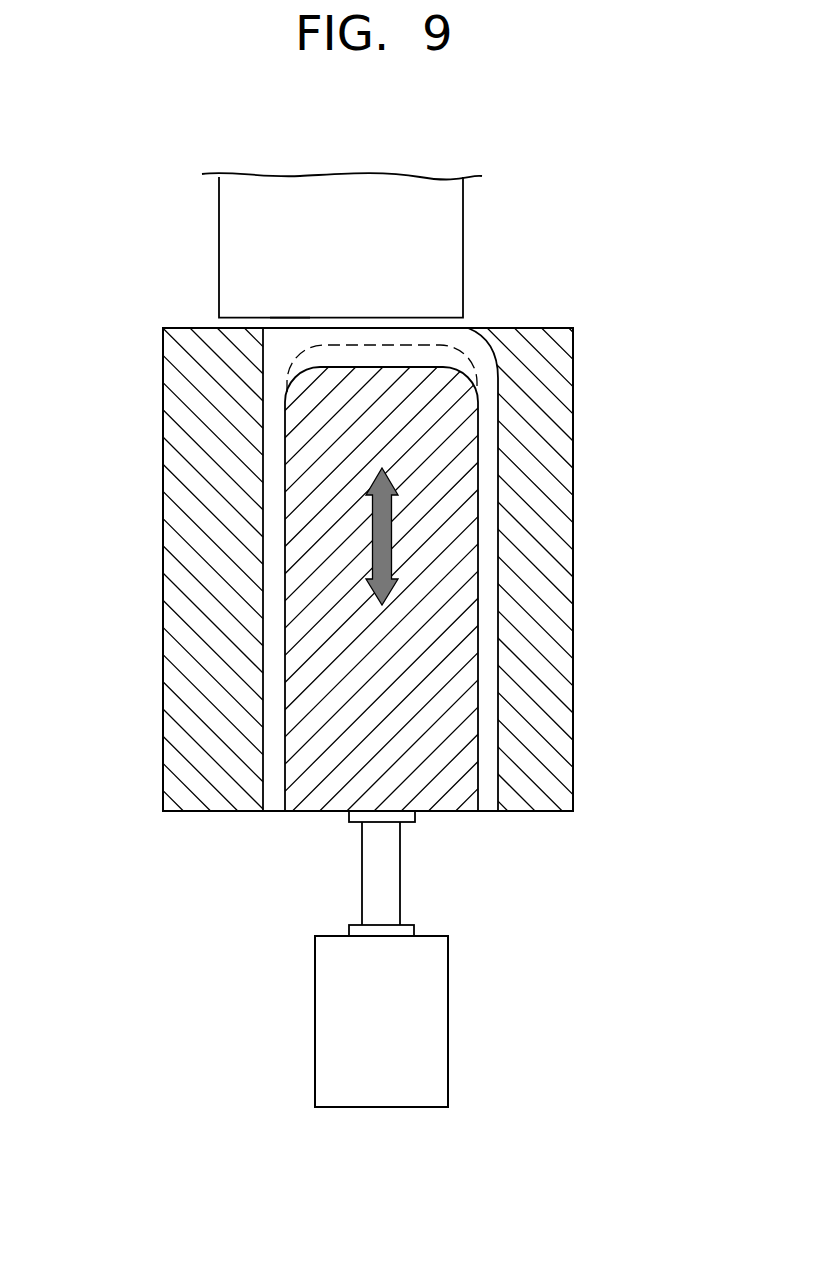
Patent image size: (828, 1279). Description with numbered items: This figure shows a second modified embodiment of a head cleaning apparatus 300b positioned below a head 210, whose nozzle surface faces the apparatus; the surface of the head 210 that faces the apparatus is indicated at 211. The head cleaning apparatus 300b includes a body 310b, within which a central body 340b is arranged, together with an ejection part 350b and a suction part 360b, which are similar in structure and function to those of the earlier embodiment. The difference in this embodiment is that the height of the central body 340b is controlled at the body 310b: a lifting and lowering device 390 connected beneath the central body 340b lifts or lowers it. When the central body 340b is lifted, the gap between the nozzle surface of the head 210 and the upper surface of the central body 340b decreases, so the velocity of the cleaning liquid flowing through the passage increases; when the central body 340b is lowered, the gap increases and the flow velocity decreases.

The head 210 is at (228, 244).
The bottom surface of upper member 211 is at (289, 318).
The head cleaning apparatus 300b is at (582, 286).
The body 310b is at (574, 602).
The central body 340b is at (282, 478).
The ejection part 350b is at (491, 489).
The suction part 360b is at (272, 537).
The lifting and lowering device 390 is at (448, 1020).